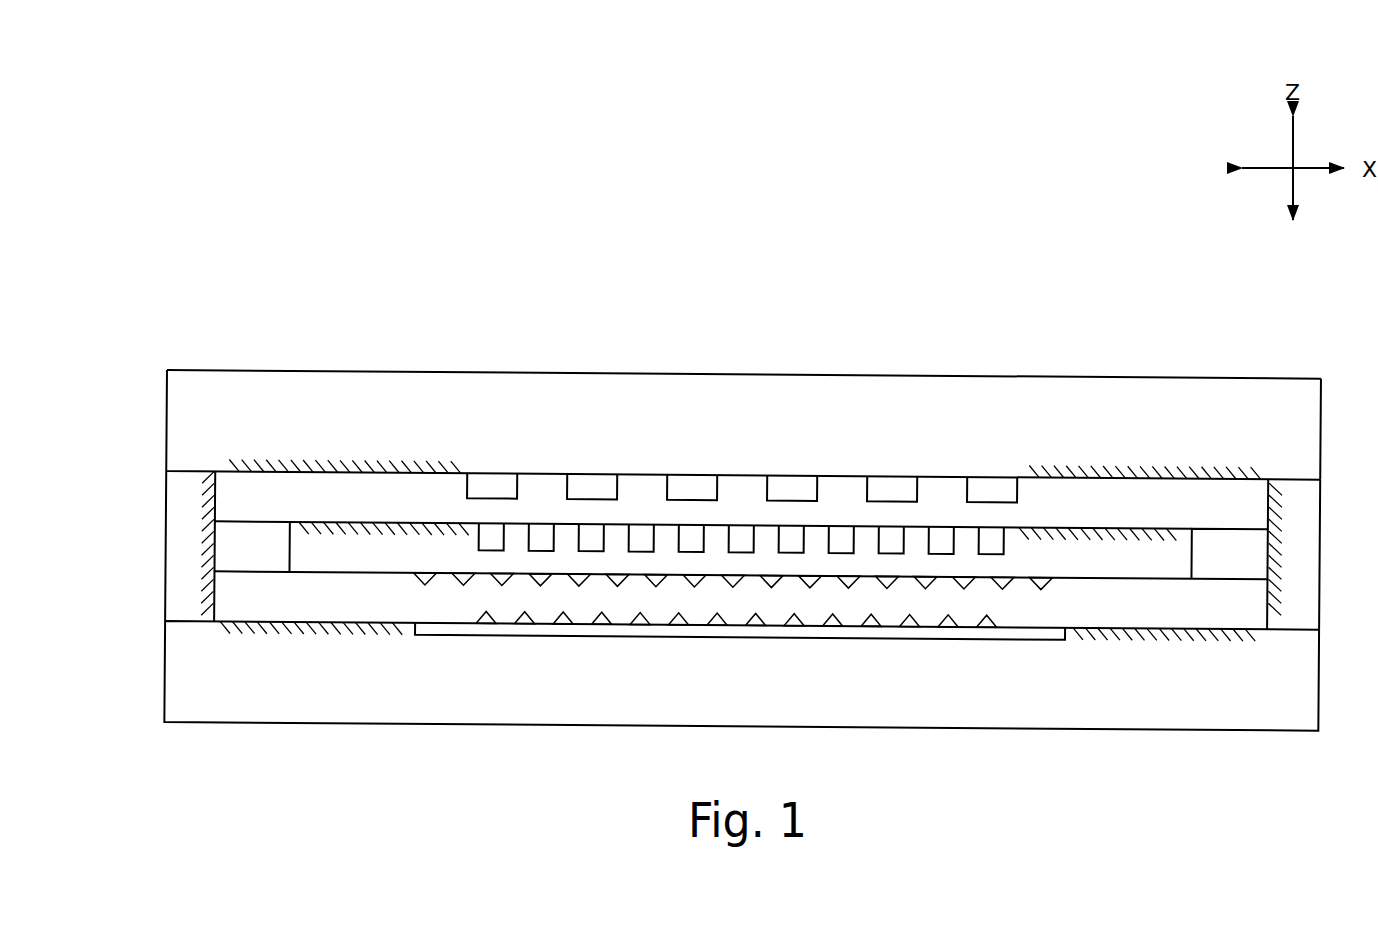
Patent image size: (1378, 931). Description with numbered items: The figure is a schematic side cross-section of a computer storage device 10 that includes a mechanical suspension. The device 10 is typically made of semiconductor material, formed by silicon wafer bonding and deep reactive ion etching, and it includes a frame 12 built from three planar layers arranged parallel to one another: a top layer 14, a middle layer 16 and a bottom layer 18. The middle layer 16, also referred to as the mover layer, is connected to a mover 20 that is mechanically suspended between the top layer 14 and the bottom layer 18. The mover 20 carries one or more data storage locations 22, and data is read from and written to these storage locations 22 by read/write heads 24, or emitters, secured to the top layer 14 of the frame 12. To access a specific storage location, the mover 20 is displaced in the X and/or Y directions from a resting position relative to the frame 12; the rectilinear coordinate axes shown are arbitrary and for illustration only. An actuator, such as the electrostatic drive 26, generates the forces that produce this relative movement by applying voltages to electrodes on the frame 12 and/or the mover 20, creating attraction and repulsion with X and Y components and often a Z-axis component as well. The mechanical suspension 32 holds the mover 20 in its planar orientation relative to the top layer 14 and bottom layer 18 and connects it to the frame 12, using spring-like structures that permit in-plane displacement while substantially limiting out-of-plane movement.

The computer storage device 10 is at (235, 294).
The frame 12 is at (705, 371).
The top layer 14 is at (166, 418).
The middle layer 16 is at (166, 547).
The bottom layer 18 is at (166, 670).
The mover 20 is at (398, 519).
The data storage locations 22 is at (943, 537).
The read/write heads 24 is at (692, 487).
The electrostatic drive 26 is at (729, 633).
The mechanical suspension 32 is at (272, 517).